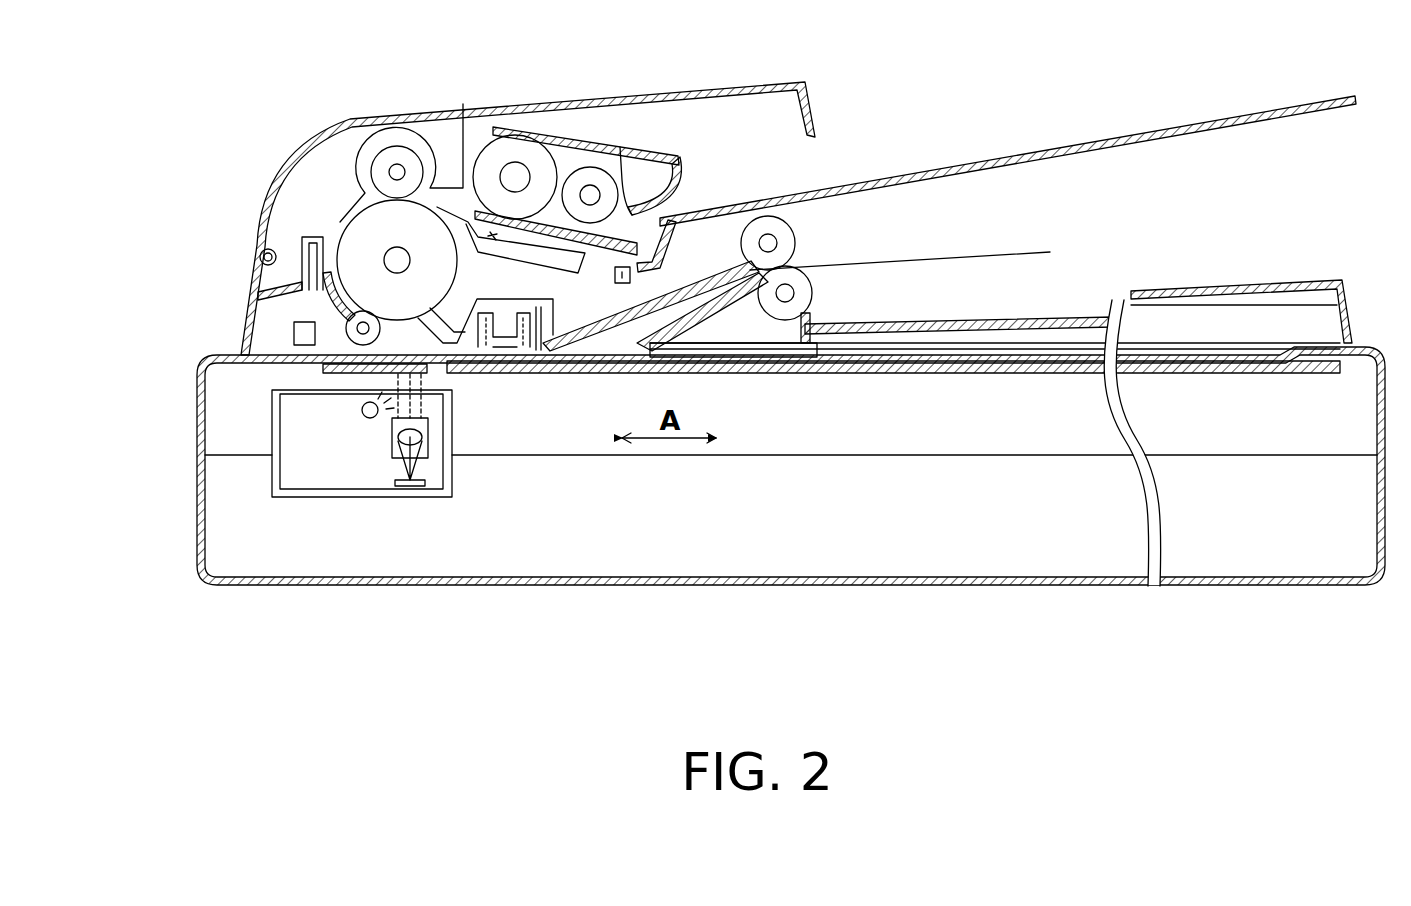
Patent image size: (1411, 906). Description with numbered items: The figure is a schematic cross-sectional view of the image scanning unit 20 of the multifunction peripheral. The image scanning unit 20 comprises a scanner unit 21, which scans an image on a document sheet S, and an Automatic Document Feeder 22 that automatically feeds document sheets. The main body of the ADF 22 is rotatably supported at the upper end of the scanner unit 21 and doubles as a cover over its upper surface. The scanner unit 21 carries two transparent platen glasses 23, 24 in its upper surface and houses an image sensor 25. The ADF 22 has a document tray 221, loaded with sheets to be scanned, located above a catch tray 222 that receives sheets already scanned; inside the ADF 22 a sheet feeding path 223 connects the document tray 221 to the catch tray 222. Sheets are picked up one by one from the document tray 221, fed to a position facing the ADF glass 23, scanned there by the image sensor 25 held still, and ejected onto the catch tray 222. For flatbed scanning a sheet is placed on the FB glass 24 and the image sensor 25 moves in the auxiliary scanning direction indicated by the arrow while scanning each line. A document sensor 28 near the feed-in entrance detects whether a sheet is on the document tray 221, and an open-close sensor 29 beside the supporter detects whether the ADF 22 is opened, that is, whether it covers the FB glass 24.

The image scanning unit 20 is at (224, 90).
The scanner unit 21 is at (198, 468).
The Automatic Document Feeder (ADF) 22 is at (340, 118).
The document tray 221 is at (1108, 130).
The catch tray 222 is at (940, 327).
The sheet feeding path 223 is at (302, 277).
The platen glass (ADF glass) 23 is at (503, 374).
The platen glass (FB glass) 24 is at (958, 388).
The image sensor 25 is at (305, 499).
The document sensor 28 is at (640, 277).
The open-close sensor 29 is at (293, 330).
The document sheet S is at (958, 265).